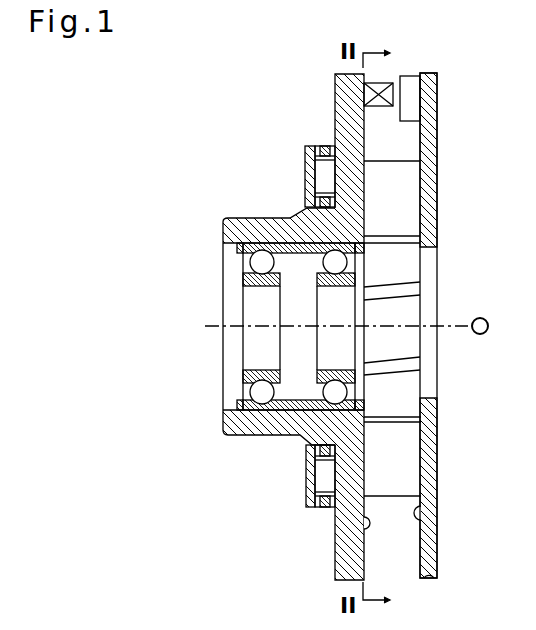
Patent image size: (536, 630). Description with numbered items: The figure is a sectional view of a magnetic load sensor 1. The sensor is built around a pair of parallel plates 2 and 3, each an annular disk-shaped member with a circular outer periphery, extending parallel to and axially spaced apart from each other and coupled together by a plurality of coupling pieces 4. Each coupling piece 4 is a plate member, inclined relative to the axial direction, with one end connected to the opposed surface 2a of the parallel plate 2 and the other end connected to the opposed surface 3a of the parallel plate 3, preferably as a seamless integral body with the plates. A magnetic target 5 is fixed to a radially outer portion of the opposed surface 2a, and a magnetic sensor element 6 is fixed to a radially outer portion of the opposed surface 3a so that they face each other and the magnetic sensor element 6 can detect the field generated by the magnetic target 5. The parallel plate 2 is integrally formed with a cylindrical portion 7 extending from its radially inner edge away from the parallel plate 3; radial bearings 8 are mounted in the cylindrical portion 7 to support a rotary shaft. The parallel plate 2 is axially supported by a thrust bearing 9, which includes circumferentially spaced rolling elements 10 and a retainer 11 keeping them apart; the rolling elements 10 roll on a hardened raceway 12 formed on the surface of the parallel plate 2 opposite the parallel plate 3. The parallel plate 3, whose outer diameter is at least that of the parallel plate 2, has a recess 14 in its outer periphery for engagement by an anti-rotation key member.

The magnetic load sensor 1 is at (457, 336).
The parallel plate 2 is at (329, 336).
The opposed surface 2a is at (363, 525).
The parallel plate 3 is at (457, 499).
The opposed surface 3a is at (419, 522).
The coupling pieces 4 is at (408, 203).
The magnetic target 5 is at (375, 88).
The magnetic sensor element 6 is at (410, 84).
The cylindrical portion 7 is at (226, 235).
The radial bearings 8 is at (334, 251).
The thrust bearing 9 is at (306, 147).
The rolling elements 10 is at (322, 480).
The retainer 11 is at (325, 508).
The raceway 12 is at (321, 463).
The recess 14 is at (437, 578).